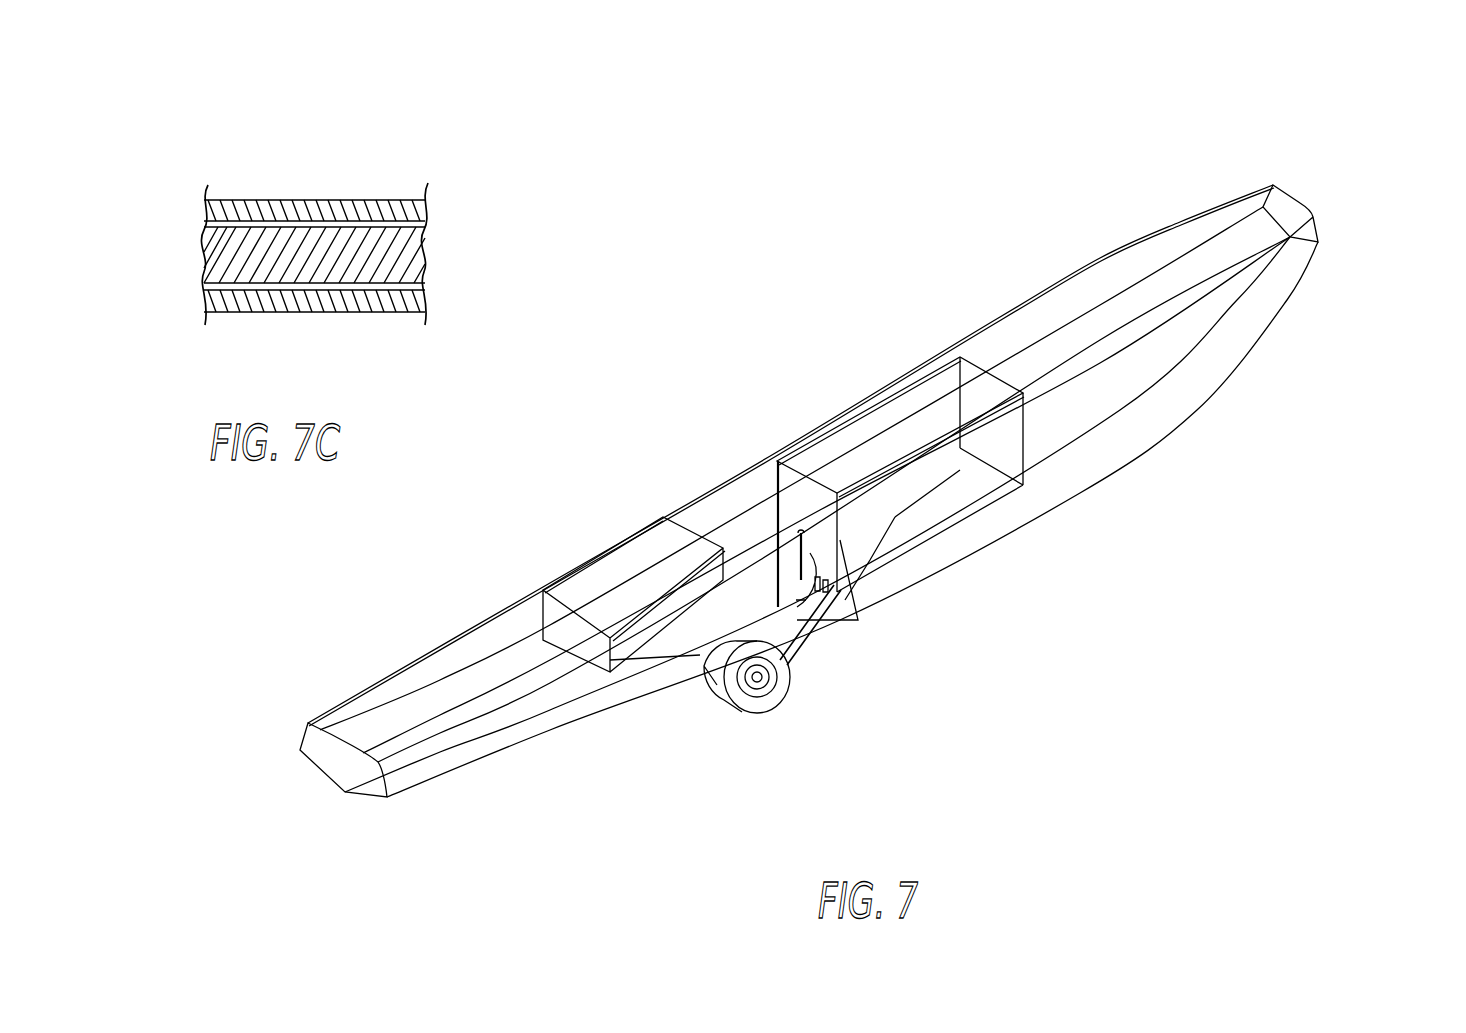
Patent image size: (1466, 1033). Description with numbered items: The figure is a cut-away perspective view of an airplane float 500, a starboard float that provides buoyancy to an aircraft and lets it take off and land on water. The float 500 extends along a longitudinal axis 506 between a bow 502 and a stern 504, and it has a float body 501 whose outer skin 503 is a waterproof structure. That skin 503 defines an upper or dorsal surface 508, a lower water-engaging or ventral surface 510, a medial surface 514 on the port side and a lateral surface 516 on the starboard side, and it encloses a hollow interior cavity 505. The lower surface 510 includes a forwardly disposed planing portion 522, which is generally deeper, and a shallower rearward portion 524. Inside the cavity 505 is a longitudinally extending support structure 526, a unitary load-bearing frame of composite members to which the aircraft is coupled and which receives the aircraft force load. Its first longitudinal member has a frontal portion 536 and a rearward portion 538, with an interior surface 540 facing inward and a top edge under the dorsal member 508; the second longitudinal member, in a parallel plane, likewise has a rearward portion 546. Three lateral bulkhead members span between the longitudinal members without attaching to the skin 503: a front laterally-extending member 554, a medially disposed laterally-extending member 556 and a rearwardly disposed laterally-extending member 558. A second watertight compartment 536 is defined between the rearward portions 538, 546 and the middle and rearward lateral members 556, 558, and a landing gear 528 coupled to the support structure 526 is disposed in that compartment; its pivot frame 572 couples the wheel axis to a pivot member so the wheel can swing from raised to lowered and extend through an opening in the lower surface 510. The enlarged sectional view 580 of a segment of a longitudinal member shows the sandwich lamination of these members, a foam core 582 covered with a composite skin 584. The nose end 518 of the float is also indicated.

In FIG. 7, the float 500 is at (821, 496).
In FIG. 7, the float body 501 is at (821, 496).
In FIG. 7, the bow 502 is at (821, 496).
In FIG. 7, the skin 503 is at (787, 519).
In FIG. 7, the stern 504 is at (312, 830).
In FIG. 7, the interior cavity 505 is at (1035, 458).
In FIG. 7, the longitudinal axis 506 is at (1397, 137).
In FIG. 7, the dorsal surface 508 is at (1045, 315).
In FIG. 7, the lower water-engaging surface 510 is at (998, 573).
In FIG. 7, the medial surface 514 is at (457, 640).
In FIG. 7, the lateral surface 516 is at (1127, 418).
In FIG. 7, the nose end 518 is at (350, 765).
In FIG. 7, the planing portion 522 is at (1158, 460).
In FIG. 7, the rearward portion 524 is at (507, 757).
In FIG. 7, the longitudinally extending support structure 526 is at (895, 518).
In FIG. 7, the landing gear 528 is at (770, 675).
In FIG. 7, the frontal portion / second watertight compartment 536 is at (866, 433).
In FIG. 7, the rearward portion 538 is at (665, 519).
In FIG. 7, the interior surface 540 is at (723, 547).
In FIG. 7, the rearward portion 546 is at (650, 643).
In FIG. 7, the first laterally-extending member 554 is at (962, 375).
In FIG. 7, the second laterally-extending member 556 is at (788, 485).
In FIG. 7, the third laterally-extending member 558 is at (610, 655).
In FIG. 7, the pivot frame 572 is at (760, 728).
In FIG. 7C, the laminate panel 580 is at (318, 240).
In FIG. 7C, the foam core 582 is at (208, 268).
In FIG. 7C, the composite skin 584 is at (335, 217).